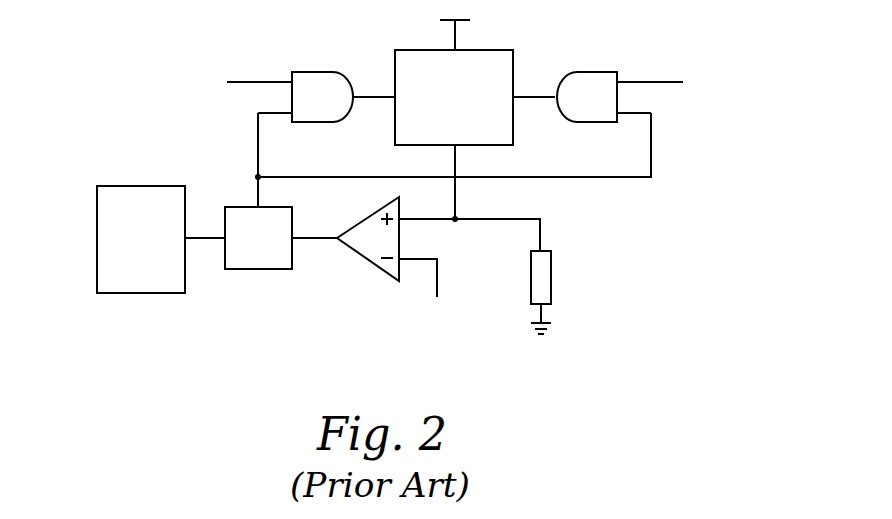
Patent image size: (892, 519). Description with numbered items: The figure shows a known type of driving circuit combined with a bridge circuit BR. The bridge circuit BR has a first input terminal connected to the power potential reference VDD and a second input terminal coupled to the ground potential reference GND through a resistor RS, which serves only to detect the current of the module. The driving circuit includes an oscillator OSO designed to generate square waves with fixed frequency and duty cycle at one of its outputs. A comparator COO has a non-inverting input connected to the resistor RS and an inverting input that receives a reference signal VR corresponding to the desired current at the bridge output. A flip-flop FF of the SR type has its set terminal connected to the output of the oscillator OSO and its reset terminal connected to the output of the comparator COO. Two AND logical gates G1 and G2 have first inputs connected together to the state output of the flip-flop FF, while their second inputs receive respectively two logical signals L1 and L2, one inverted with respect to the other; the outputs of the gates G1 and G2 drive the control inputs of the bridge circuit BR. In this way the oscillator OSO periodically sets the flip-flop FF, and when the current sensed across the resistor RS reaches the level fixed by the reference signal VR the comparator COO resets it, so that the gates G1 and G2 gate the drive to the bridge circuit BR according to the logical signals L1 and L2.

The AND logical gate G1 is at (318, 83).
The AND logical gate G2 is at (592, 85).
The bridge circuit BR is at (508, 63).
The logical signal L1 is at (247, 82).
The logical signal L2 is at (665, 82).
The power potential reference VDD is at (454, 25).
The oscillator OSO is at (145, 287).
The flip-flop FF is at (260, 267).
The comparator COO is at (372, 252).
The reference signal VR is at (438, 294).
The resistor RS is at (548, 278).
The ground potential reference GND is at (566, 325).